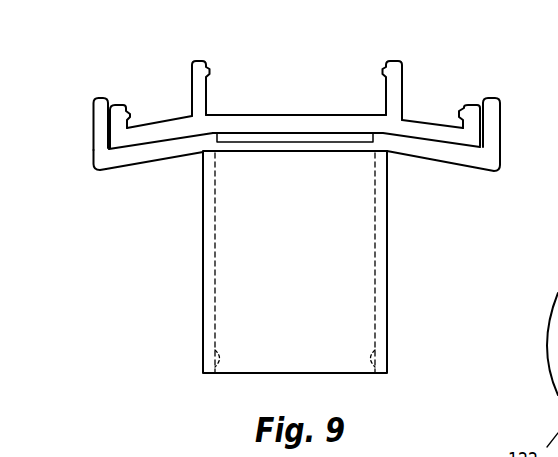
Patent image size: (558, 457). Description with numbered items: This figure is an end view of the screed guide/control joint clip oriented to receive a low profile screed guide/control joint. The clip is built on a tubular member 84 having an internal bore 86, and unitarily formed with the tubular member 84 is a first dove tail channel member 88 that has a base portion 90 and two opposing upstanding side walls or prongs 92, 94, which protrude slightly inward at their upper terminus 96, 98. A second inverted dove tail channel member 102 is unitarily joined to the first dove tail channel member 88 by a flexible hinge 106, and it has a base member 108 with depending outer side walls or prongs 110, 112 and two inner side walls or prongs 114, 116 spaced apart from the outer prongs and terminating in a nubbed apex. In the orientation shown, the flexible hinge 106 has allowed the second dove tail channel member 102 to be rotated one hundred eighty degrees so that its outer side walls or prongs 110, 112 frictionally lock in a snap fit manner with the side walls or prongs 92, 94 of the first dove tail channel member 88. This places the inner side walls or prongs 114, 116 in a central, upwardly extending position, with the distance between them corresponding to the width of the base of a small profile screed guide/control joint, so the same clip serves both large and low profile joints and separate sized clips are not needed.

The tubular member 84 is at (388, 253).
The internal bore 86 is at (223, 367).
The first dove tail channel member 88 is at (82, 116).
The base portion 90 is at (153, 148).
The upstanding side wall or prong 92 is at (92, 133).
The upstanding side wall or prong 94 is at (502, 132).
The upper terminus 96 is at (105, 97).
The upper terminus 98 is at (492, 97).
The second inverted dove tail channel member 102 is at (276, 107).
The flexible hinge 106 is at (303, 135).
The base member 108 is at (242, 114).
The outer side wall or prong 110 is at (125, 103).
The outer side wall or prong 112 is at (466, 103).
The inner side wall or prong 114 is at (203, 60).
The inner side wall or prong 116 is at (393, 60).